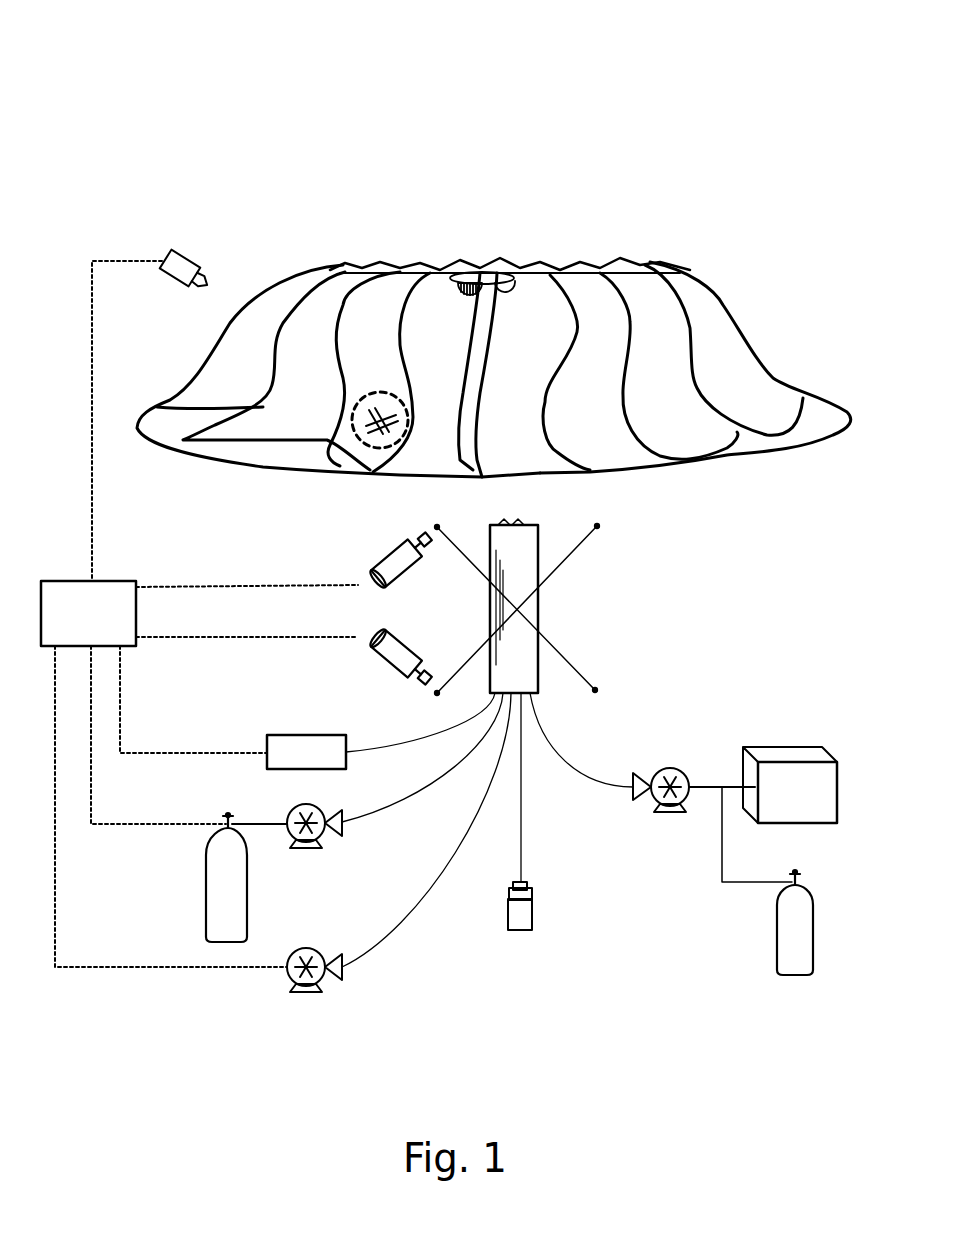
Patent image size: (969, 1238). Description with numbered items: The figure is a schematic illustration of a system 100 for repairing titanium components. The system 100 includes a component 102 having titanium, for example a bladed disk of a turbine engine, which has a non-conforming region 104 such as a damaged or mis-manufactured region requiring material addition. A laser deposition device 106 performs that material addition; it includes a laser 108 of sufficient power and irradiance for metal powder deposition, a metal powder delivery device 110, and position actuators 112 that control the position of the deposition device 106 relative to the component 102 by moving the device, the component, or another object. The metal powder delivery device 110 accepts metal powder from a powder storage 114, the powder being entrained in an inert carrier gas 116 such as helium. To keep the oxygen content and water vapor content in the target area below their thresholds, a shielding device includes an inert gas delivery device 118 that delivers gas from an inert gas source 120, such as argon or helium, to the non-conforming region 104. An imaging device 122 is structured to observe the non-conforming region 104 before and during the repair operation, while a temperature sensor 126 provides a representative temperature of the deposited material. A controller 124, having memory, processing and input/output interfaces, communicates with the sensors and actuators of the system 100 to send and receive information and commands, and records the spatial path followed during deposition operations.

The system for repairing titanium components 100 is at (130, 73).
The component 102 is at (590, 205).
The non-conforming region 104 is at (381, 392).
The laser deposition device 106 is at (541, 604).
The laser 108 is at (306, 734).
The metal powder delivery device 110 is at (675, 767).
The position actuators 112 is at (365, 597).
The powder storage 114 is at (803, 748).
The inert carrier gas 116 is at (777, 917).
The inert gas delivery device 118 is at (308, 850).
The inert gas source 120 is at (206, 870).
The imaging device 122 is at (521, 933).
The controller 124 is at (199, 774).
The temperature sensor 126 is at (175, 248).